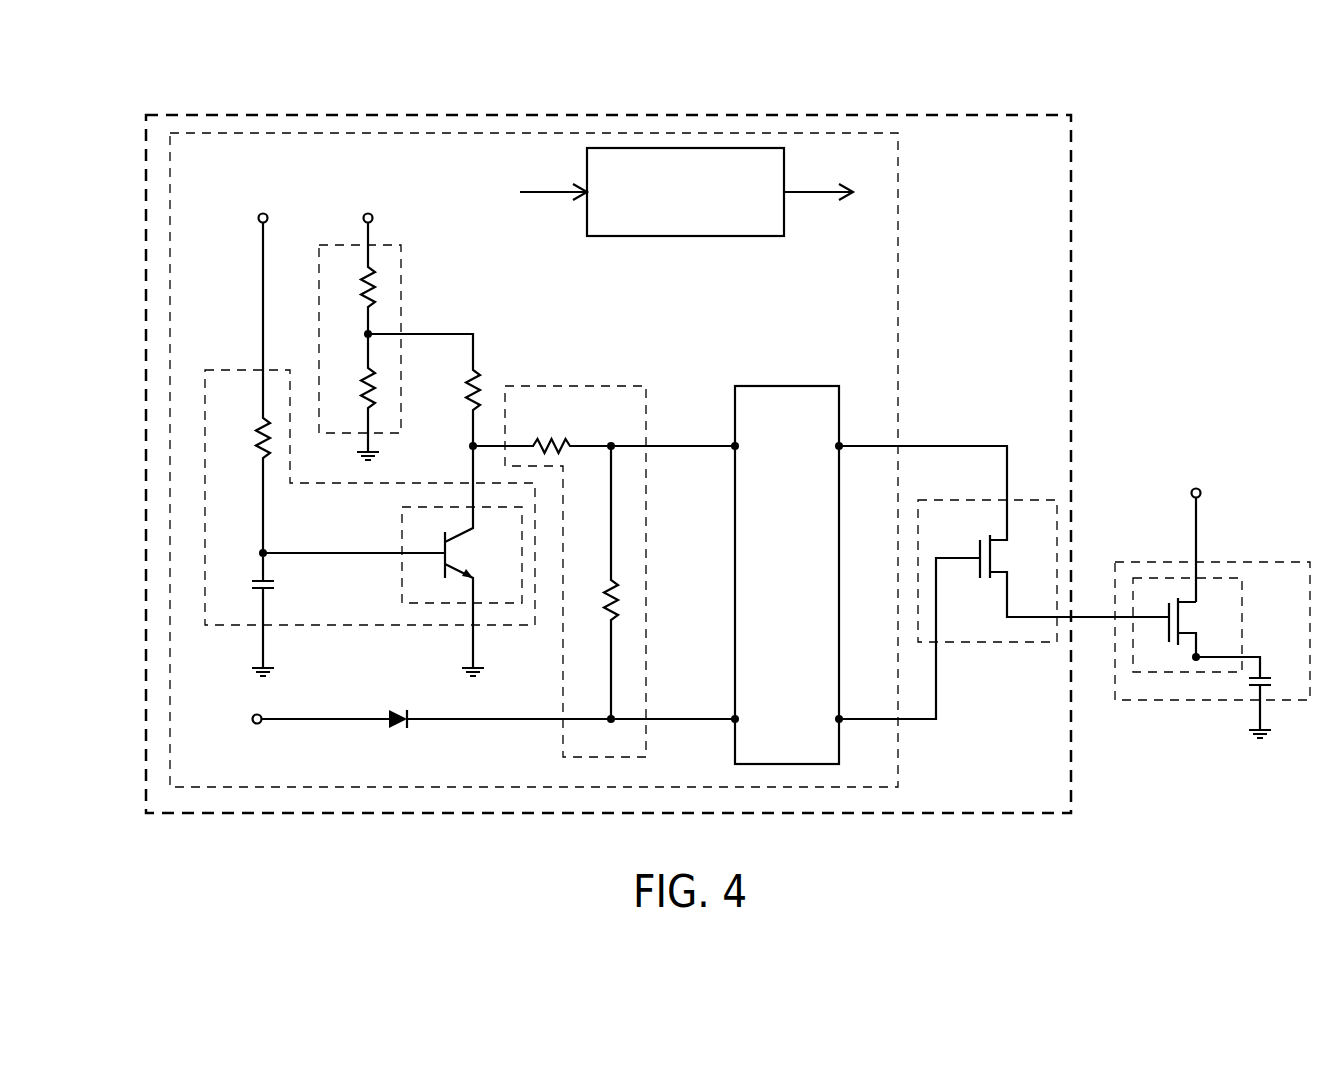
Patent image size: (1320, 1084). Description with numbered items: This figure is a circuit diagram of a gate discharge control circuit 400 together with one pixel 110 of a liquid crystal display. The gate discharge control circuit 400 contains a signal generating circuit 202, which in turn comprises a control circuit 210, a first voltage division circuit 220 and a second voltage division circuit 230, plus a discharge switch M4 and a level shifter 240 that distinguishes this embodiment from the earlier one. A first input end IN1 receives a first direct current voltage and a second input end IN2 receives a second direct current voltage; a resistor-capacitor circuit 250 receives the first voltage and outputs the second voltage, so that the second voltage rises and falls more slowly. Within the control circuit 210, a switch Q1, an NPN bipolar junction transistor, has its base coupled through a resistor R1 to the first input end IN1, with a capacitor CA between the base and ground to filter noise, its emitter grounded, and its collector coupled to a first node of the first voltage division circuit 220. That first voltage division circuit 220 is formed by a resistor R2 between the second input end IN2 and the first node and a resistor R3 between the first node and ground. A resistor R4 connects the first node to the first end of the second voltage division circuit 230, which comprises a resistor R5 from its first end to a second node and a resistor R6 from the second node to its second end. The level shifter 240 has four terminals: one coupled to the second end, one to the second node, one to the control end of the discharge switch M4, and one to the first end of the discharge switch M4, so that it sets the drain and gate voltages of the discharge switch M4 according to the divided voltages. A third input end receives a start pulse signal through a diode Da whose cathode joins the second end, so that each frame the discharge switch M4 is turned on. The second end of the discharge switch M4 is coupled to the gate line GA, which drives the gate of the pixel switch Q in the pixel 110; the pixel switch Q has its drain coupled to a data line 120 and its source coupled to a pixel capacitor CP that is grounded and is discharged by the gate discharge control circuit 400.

The gate discharge control circuit 400 is at (1071, 219).
The signal generating circuit 202 is at (898, 234).
The control circuit 210 is at (237, 369).
The first voltage division circuit 220 is at (401, 281).
The second voltage division circuit 230 is at (585, 385).
The level shifter 240 is at (785, 385).
The resistor-capacitor circuit 250 is at (685, 237).
The pixel 110 is at (1160, 703).
The data line 120 is at (1198, 513).
The discharge switch M4 is at (998, 645).
The pixel switch Q is at (1242, 617).
The switch Q1 is at (402, 540).
The diode Da is at (259, 724).
The resistor R1 is at (245, 388).
The resistor R2 is at (352, 278).
The resistor R3 is at (379, 403).
The resistor R4 is at (424, 390).
The resistor R5 is at (604, 432).
The resistor R6 is at (594, 582).
The capacitor CA is at (273, 622).
The pixel capacitor CP is at (1245, 713).
The gate line GA is at (1091, 612).
The first input end IN1 is at (257, 220).
The second input end IN2 is at (374, 220).